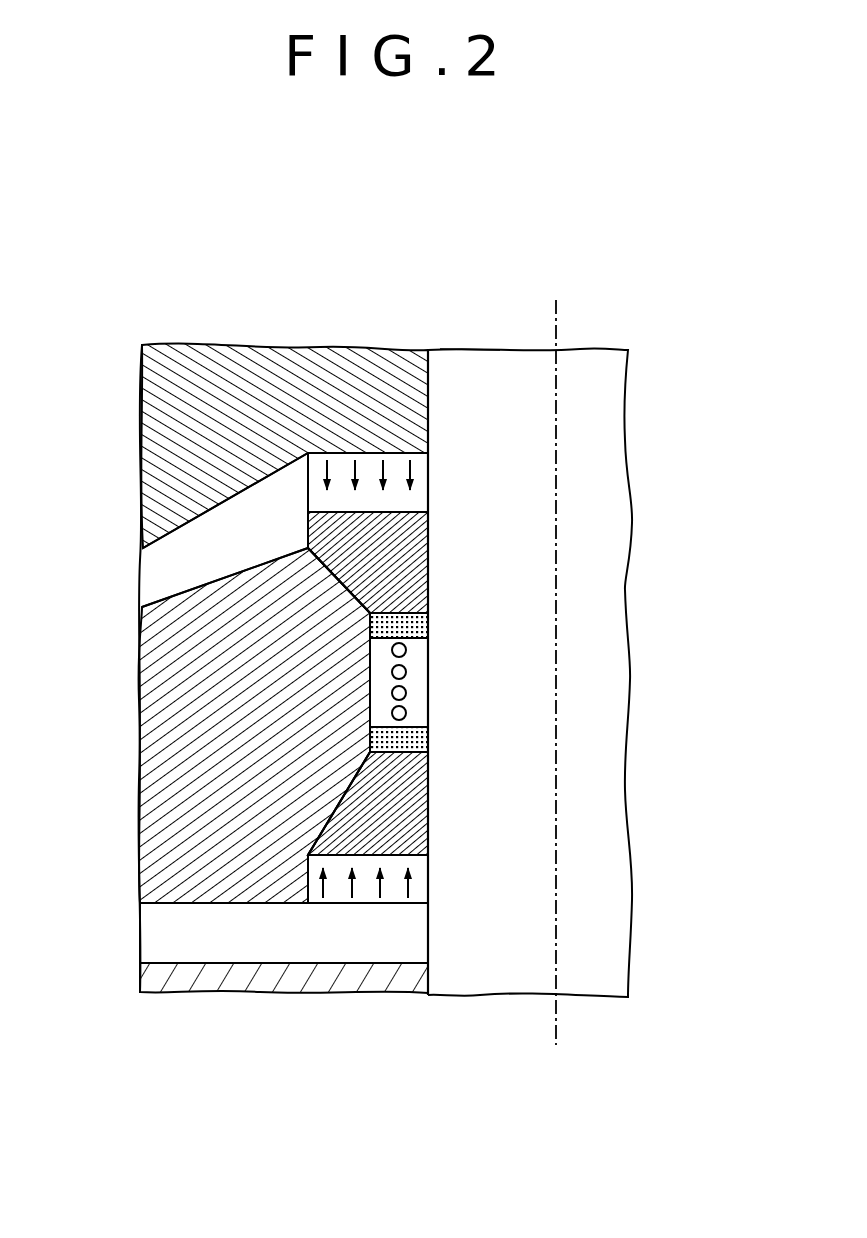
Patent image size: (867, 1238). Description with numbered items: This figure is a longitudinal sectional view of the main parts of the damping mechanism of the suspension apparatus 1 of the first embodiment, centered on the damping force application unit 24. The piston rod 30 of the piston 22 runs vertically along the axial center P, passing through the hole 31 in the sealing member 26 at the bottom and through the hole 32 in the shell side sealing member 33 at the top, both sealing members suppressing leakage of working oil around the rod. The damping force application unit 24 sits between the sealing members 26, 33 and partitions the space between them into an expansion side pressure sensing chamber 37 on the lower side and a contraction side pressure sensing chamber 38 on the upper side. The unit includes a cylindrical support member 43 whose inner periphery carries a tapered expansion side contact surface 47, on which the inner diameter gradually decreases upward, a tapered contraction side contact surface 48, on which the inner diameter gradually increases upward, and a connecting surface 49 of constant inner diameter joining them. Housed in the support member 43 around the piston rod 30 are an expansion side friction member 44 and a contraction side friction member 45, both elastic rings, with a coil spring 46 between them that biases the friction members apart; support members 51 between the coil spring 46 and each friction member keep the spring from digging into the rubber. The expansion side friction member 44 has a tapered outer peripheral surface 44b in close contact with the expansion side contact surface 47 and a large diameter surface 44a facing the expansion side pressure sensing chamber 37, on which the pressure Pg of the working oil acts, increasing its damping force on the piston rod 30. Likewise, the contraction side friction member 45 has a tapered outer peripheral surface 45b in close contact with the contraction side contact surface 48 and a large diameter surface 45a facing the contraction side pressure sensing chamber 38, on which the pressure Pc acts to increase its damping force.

The fluid dynamic bearing device 1 is at (383, 251).
The piston 22 is at (466, 341).
The damping force application unit 24 is at (126, 560).
The sealing member 26 is at (267, 978).
The piston rod 30 is at (513, 365).
The hole 31 is at (428, 990).
The hole 32 is at (430, 388).
The shell side sealing member 33 is at (278, 372).
The expansion side pressure sensing chamber 37 is at (160, 936).
The contraction side pressure sensing chamber 38 is at (152, 578).
The support member 43 is at (162, 702).
The expansion side friction member 44 is at (328, 809).
The large diameter surface 44a is at (340, 856).
The outer peripheral surface 44b is at (345, 790).
The contraction side friction member 45 is at (328, 573).
The large diameter surface 45a is at (341, 510).
The outer peripheral surface 45b is at (341, 602).
The coil spring 46 is at (406, 671).
The expansion side contact surface 47 is at (365, 770).
The contraction side contact surface 48 is at (368, 592).
The connecting surface 49 is at (373, 703).
The support members 51 is at (413, 627).
The axial center P is at (560, 330).
The pressure Pc is at (400, 505).
The pressure Pg is at (358, 880).